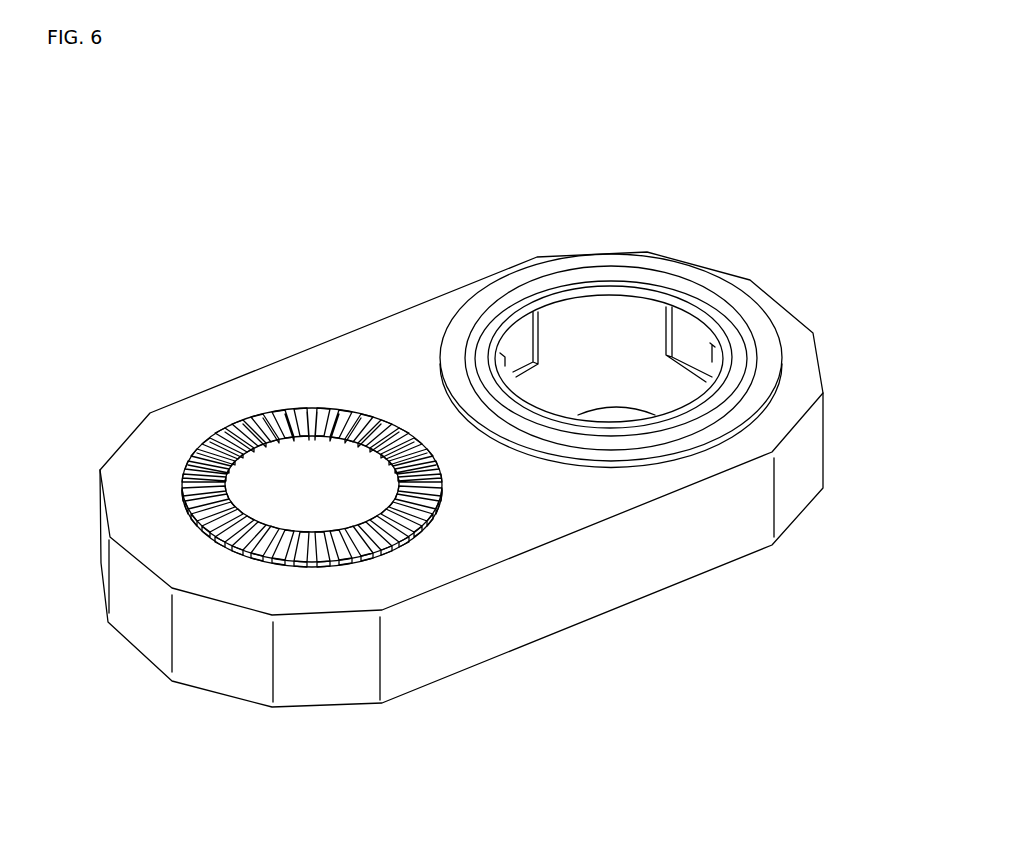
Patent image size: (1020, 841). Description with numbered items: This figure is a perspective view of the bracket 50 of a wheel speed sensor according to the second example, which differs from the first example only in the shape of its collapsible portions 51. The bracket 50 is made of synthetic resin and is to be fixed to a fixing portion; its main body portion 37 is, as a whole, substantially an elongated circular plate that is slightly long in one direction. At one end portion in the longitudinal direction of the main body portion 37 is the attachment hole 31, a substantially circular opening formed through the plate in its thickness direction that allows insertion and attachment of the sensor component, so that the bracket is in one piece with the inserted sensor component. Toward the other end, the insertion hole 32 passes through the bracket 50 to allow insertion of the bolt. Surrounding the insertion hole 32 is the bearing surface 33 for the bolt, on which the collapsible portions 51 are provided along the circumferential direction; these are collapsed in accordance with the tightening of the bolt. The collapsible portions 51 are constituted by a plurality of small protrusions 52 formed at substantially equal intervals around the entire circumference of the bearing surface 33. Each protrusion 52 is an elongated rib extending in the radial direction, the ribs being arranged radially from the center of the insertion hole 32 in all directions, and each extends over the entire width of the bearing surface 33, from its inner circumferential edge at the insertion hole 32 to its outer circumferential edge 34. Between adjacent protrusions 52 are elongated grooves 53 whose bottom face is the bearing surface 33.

The bracket 50 is at (402, 183).
The main body portion 37 is at (430, 318).
The attachment hole 31 is at (633, 320).
The collapsible portions 51 is at (280, 410).
The outer circumferential edge 34 is at (222, 533).
The insertion hole 32 is at (337, 455).
The bearing surface 33 is at (297, 412).
The protrusions 52 is at (307, 553).
The grooves 53 is at (362, 550).